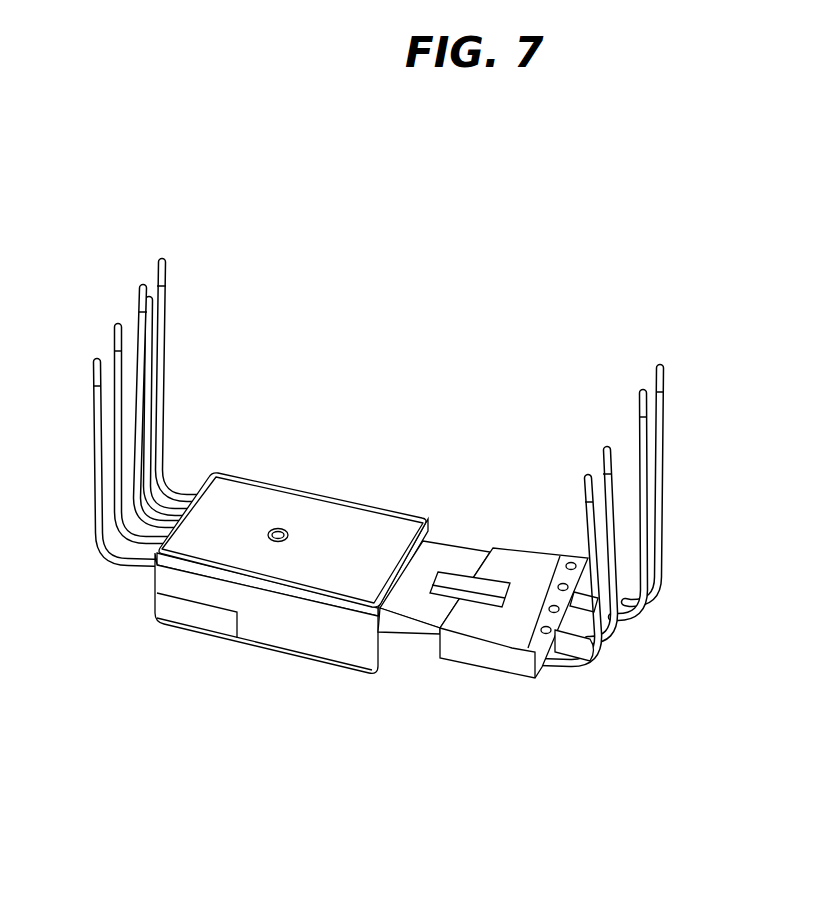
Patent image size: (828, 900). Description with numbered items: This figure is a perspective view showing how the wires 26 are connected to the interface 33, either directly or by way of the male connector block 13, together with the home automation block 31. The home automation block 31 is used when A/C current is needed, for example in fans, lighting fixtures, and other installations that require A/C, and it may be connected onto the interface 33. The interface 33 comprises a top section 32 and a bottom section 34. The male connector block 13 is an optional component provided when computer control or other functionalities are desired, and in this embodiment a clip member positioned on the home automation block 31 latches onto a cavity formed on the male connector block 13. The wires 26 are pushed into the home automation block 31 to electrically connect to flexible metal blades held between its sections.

The wires 26 is at (660, 368).
The interface 33 is at (251, 533).
The top section 32 is at (340, 571).
The bottom section 34 is at (200, 618).
The home automation block 31 is at (425, 612).
The male connector block 13 is at (502, 662).